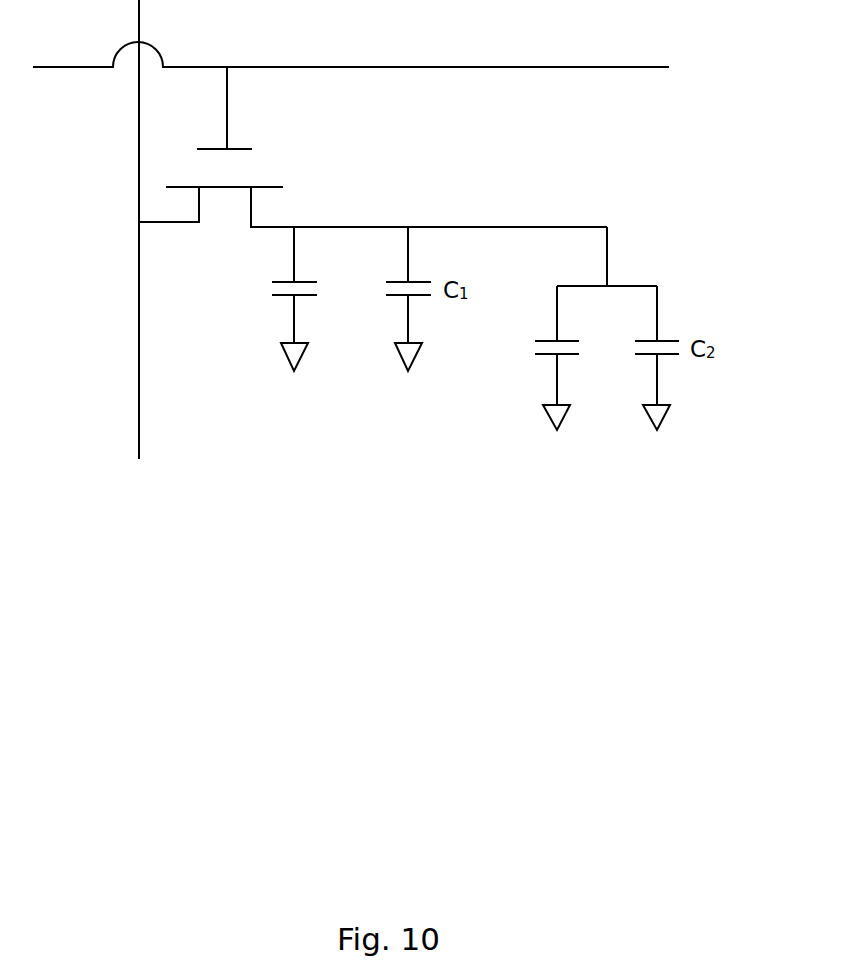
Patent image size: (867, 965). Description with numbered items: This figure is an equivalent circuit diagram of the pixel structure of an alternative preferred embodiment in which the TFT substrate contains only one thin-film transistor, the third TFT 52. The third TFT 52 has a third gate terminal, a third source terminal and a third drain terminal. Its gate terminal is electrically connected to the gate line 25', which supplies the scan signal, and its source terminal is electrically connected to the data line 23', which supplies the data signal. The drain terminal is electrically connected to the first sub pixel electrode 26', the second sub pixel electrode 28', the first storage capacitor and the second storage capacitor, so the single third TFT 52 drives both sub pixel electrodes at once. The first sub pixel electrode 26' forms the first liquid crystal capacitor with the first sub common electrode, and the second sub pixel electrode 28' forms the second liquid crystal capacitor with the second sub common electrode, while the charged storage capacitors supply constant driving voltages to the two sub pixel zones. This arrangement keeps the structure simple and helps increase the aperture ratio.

The data line 23' is at (89, 229).
The gate line 25' is at (351, 36).
The third TFT 52 is at (245, 166).
The first sub pixel electrode 26' is at (277, 299).
The second sub pixel electrode 28' is at (548, 358).